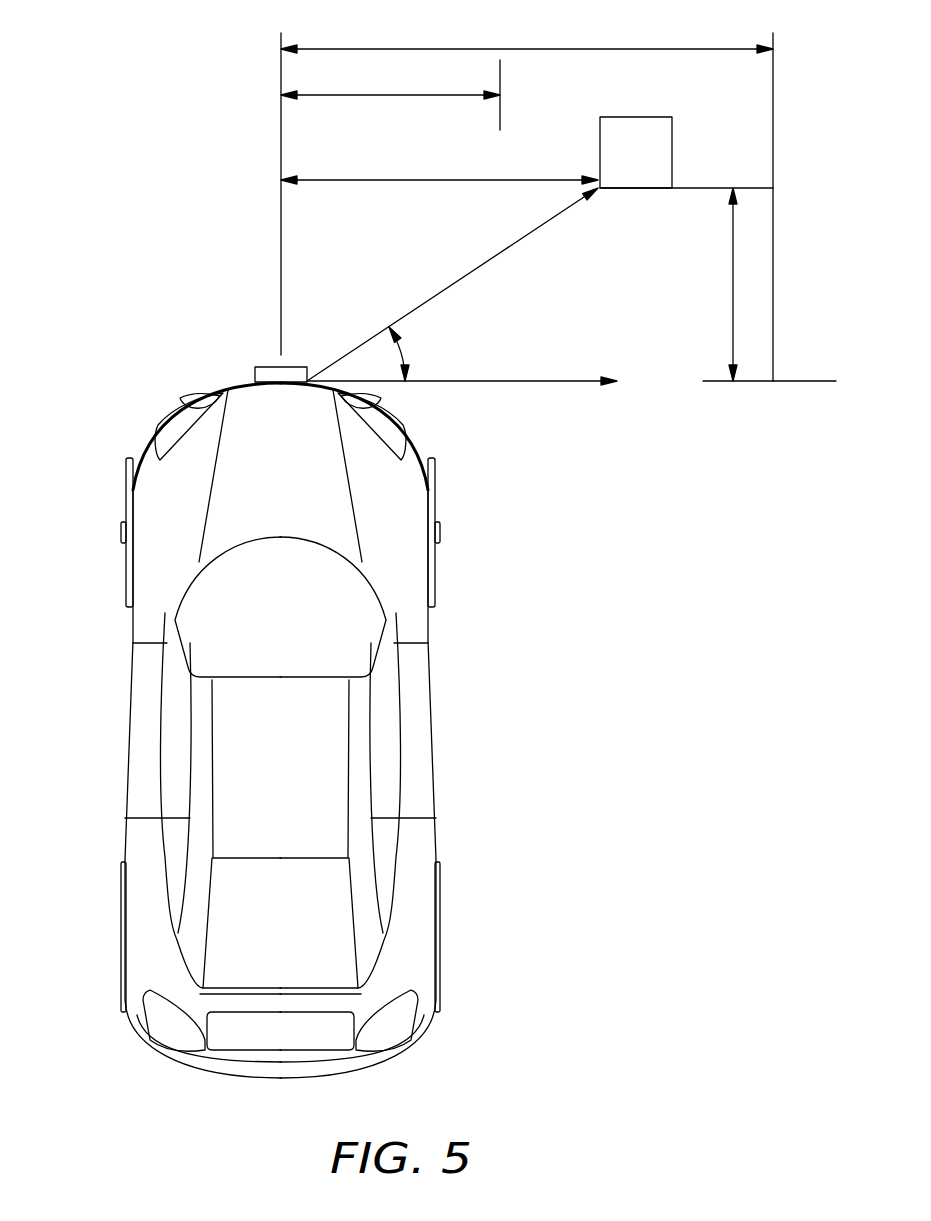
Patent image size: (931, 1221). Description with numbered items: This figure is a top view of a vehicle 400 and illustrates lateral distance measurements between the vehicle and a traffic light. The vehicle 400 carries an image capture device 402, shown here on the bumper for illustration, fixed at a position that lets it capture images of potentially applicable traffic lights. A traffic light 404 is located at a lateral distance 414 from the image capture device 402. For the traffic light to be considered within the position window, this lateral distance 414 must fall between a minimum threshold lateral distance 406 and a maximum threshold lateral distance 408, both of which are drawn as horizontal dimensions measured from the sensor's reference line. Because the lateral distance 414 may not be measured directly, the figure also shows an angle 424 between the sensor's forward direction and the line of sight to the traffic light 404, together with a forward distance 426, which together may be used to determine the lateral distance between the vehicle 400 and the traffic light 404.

The vehicle 400 is at (131, 630).
The image capture device 402 is at (258, 377).
The traffic light 404 is at (636, 117).
The minimum threshold lateral distance 406 is at (377, 94).
The maximum threshold lateral distance 408 is at (628, 47).
The lateral distance 414 is at (386, 179).
The angle 424 is at (410, 352).
The forward distance 426 is at (733, 316).